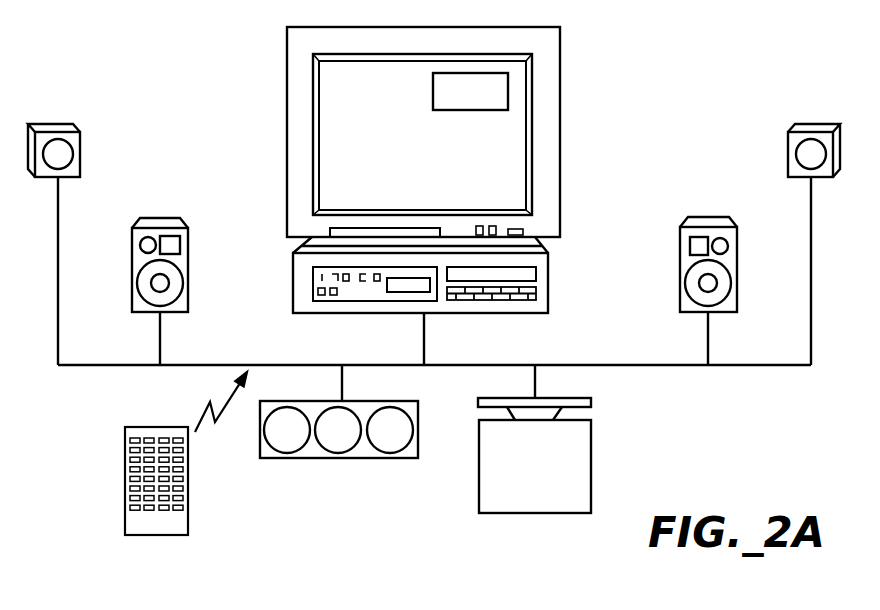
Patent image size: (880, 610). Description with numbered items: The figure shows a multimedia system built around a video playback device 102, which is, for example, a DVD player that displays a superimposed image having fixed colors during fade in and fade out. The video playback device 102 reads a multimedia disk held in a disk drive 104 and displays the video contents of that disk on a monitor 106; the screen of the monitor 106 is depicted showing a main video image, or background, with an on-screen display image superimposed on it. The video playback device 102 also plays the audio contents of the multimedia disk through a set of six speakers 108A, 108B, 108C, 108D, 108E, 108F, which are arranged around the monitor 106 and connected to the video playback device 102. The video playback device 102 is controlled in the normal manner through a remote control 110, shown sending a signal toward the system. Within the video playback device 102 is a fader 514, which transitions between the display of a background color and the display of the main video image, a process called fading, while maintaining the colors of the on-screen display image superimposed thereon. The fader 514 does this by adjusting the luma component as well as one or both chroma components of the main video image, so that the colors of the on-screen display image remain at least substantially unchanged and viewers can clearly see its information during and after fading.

The video playback device 102 is at (421, 304).
The disk drive 104 is at (537, 275).
The monitor 106 is at (287, 132).
The speaker 108A is at (50, 123).
The speaker 108B is at (160, 218).
The speaker 108C is at (288, 458).
The speaker 108D is at (479, 478).
The speaker 108E is at (708, 217).
The speaker 108F is at (812, 124).
The remote control 110 is at (188, 512).
The fader 514 is at (412, 292).